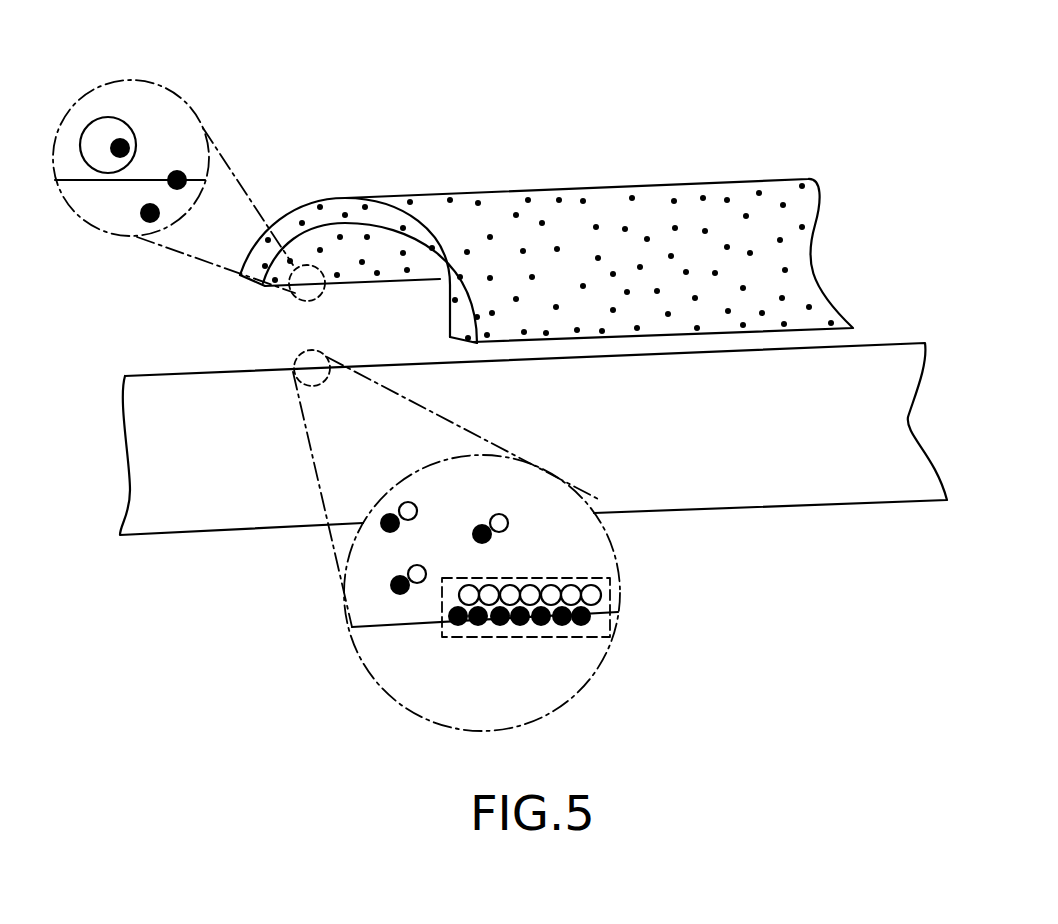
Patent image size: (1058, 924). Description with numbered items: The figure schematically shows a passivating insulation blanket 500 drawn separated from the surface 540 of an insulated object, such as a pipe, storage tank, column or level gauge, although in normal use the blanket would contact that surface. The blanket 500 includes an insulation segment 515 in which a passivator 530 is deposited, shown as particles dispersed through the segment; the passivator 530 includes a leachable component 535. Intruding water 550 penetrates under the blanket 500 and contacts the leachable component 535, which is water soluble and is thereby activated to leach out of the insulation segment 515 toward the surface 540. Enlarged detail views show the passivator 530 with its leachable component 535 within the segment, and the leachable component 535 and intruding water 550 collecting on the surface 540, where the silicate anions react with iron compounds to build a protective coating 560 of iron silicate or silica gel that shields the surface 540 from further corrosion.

The passivating insulation blanket 500 is at (705, 138).
The insulation segment 515 is at (615, 185).
The passivator 530 is at (515, 213).
The leachable component 535 is at (130, 148).
The surface 540 is at (153, 373).
The intruding water 550 is at (509, 522).
The protective coating 560 is at (470, 640).